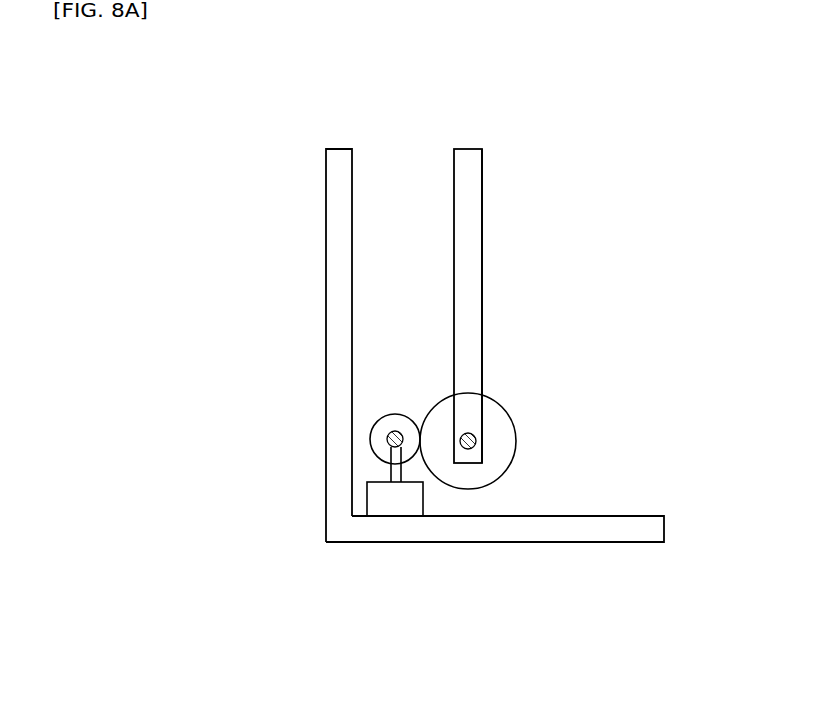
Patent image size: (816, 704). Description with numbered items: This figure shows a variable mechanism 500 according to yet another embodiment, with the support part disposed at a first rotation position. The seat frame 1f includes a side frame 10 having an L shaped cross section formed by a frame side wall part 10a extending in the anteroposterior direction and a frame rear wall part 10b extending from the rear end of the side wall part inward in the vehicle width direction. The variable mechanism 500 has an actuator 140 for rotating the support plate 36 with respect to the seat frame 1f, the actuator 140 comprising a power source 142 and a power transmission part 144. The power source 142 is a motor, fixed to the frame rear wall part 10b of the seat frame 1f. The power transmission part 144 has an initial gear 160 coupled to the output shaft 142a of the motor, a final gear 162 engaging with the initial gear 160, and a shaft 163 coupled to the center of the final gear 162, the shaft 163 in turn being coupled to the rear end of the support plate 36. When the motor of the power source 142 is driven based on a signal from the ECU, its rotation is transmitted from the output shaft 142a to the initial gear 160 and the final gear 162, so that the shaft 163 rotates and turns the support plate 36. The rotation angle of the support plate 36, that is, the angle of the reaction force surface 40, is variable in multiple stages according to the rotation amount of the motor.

The variable mechanism 500 is at (512, 108).
The side frame 10 is at (326, 195).
The frame side wall part 10a is at (338, 320).
The frame rear wall part 10b is at (472, 527).
The support plate 36 is at (482, 203).
The reaction force surface 40 is at (482, 280).
The actuator 140 is at (618, 435).
The power source 142 is at (417, 503).
The output shaft 142a is at (390, 469).
The power transmission part 144 is at (625, 315).
The initial gear 160 is at (395, 422).
The final gear 162 is at (500, 443).
The shaft 163 is at (470, 433).
The seat frame 1f is at (589, 542).